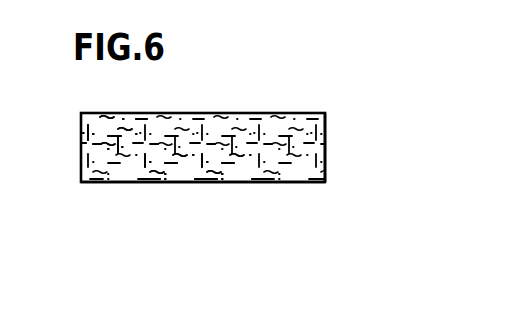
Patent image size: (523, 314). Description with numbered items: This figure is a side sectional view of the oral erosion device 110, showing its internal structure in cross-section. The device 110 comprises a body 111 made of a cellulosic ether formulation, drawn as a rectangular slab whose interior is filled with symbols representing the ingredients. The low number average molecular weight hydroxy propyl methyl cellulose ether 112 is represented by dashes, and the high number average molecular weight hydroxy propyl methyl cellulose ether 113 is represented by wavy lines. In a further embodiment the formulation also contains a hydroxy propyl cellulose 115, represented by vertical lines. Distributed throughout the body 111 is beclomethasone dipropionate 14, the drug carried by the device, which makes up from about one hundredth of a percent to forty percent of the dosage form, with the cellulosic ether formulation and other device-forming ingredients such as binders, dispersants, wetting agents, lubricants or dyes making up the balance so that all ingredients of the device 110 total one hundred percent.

The oral erosion device 110 is at (293, 98).
The body 111 is at (325, 146).
The low number average molecular weight hydroxy propyl methyl cellulose ether 112 is at (285, 165).
The high number average molecular weight hydroxy propyl methyl cellulose ether 113 is at (241, 158).
The beclomethasone dipropionate 14 is at (178, 181).
The hydroxy propyl cellulose 115 is at (116, 137).